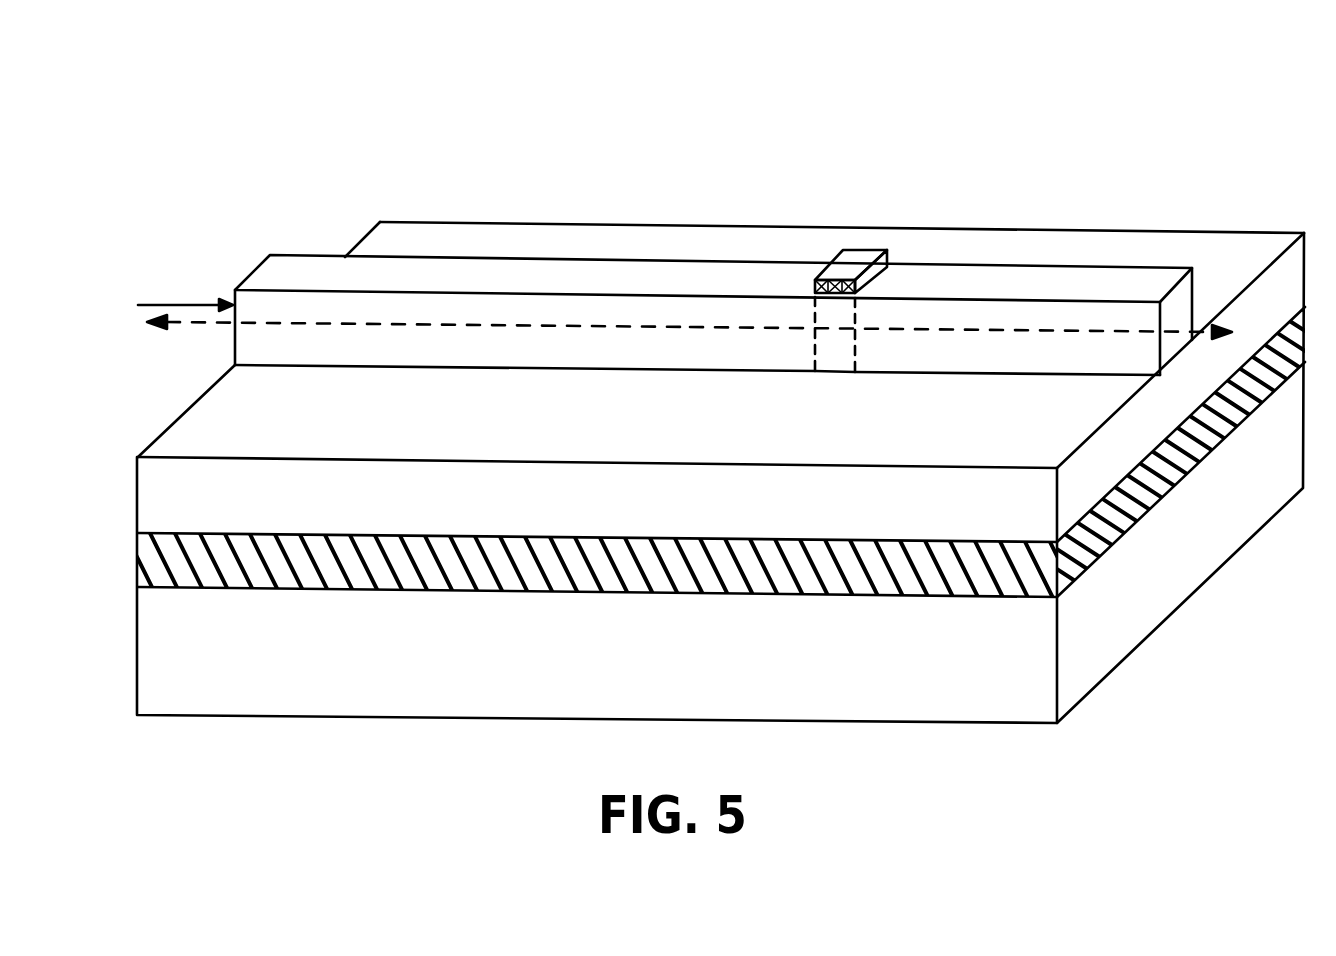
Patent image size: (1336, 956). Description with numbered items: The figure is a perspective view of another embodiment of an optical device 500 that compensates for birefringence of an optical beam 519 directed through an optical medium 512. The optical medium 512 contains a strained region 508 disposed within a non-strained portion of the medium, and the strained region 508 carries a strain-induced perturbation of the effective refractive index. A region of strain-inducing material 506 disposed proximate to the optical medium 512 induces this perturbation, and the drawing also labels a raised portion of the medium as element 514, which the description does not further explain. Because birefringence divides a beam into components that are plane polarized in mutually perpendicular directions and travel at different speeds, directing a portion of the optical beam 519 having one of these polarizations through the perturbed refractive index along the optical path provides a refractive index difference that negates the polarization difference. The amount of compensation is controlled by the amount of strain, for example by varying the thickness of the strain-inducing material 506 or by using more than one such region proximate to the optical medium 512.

The optical device 500 is at (1173, 71).
The region of strain-inducing material 506 is at (857, 258).
The strained region 508 is at (835, 334).
The optical medium 512 is at (170, 438).
The ridge waveguide 514 is at (1180, 303).
The optical beam 519 is at (170, 303).